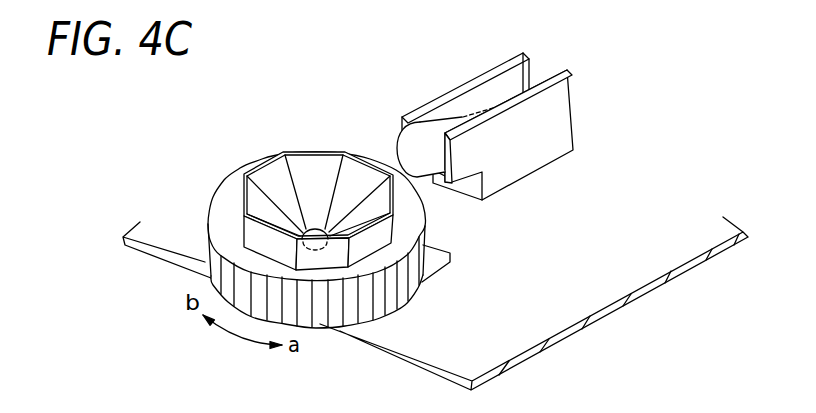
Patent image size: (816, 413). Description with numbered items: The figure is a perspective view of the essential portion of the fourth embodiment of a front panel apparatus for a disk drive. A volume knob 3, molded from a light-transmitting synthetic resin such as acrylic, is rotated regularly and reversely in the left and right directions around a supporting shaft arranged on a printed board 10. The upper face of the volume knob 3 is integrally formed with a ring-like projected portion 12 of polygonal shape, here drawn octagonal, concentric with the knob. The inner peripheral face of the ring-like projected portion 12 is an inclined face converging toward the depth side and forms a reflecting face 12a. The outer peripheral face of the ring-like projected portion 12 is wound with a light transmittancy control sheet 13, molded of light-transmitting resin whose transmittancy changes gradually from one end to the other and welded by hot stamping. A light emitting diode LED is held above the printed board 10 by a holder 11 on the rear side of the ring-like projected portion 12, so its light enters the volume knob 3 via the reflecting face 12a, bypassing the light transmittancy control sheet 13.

The volume knob 3 is at (207, 251).
The printed board 10 is at (607, 285).
The holder 11 is at (563, 127).
The ring-like projected portion 12 is at (321, 135).
The reflecting face 12a is at (277, 186).
The light transmittancy control sheet 13 is at (357, 155).
The light emitting diode LED is at (398, 140).